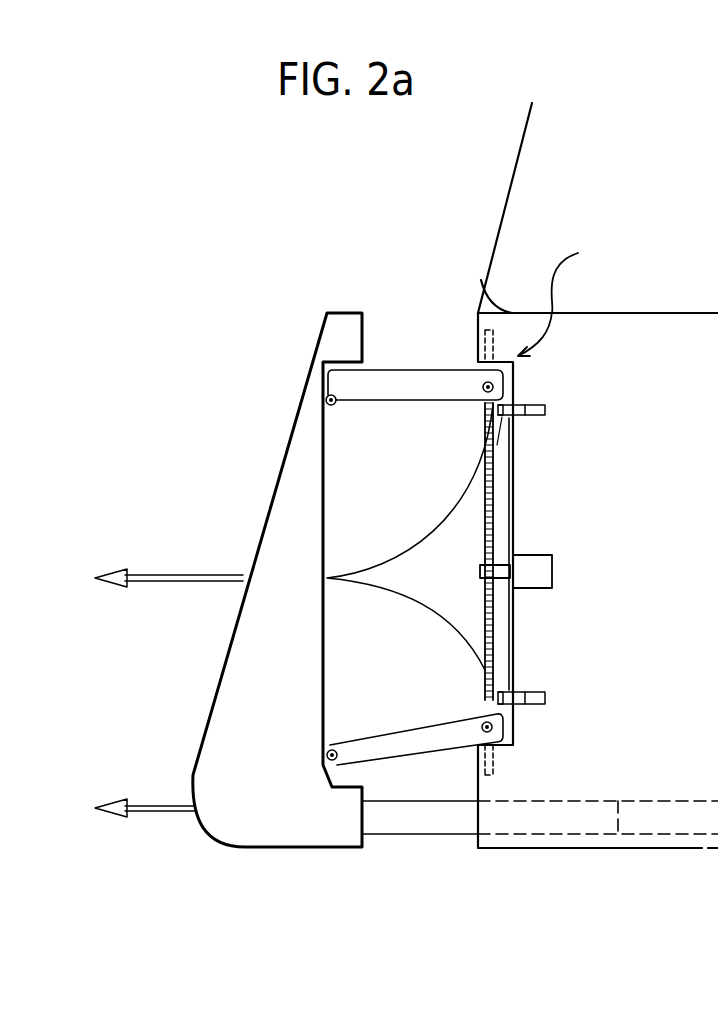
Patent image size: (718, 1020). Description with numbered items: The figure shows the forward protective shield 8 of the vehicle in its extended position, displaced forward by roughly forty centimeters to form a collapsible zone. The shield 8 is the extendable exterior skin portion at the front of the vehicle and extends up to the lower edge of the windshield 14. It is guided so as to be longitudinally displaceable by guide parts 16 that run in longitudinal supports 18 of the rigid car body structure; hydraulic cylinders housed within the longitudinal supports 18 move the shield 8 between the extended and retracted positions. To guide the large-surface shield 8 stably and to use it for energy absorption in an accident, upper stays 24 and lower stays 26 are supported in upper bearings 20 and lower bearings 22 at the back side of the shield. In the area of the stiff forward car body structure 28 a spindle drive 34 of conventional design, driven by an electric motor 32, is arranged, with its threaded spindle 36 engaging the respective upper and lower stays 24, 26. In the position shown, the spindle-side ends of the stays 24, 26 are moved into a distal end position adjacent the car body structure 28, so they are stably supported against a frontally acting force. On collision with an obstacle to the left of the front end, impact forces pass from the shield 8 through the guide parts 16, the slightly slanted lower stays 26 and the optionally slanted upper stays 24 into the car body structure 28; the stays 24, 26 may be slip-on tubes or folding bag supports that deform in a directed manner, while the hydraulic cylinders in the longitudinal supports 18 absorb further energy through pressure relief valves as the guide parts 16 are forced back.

The protective shield 8 is at (262, 528).
The windshield 14 is at (500, 213).
The guide parts 16 is at (424, 817).
The longitudinal supports 18 is at (650, 808).
The upper bearings 20 is at (326, 400).
The lower bearings 22 is at (327, 752).
The upper stays 24 is at (412, 383).
The lower stays 26 is at (395, 745).
The car body structure 28 is at (560, 301).
The electric motor 32 is at (537, 570).
The spindle drive 34 is at (511, 516).
The threaded spindle 36 is at (495, 620).